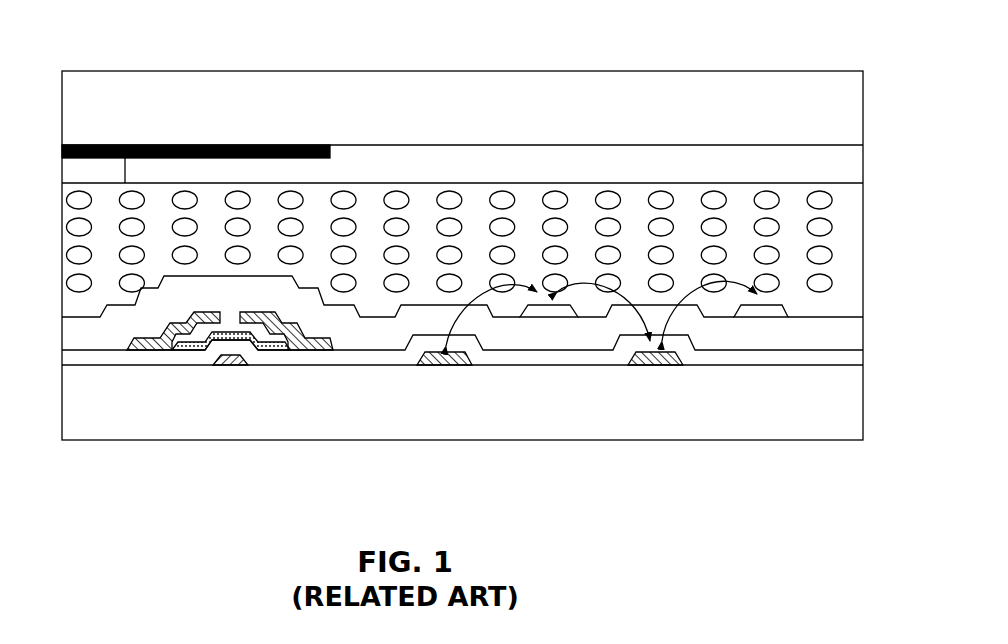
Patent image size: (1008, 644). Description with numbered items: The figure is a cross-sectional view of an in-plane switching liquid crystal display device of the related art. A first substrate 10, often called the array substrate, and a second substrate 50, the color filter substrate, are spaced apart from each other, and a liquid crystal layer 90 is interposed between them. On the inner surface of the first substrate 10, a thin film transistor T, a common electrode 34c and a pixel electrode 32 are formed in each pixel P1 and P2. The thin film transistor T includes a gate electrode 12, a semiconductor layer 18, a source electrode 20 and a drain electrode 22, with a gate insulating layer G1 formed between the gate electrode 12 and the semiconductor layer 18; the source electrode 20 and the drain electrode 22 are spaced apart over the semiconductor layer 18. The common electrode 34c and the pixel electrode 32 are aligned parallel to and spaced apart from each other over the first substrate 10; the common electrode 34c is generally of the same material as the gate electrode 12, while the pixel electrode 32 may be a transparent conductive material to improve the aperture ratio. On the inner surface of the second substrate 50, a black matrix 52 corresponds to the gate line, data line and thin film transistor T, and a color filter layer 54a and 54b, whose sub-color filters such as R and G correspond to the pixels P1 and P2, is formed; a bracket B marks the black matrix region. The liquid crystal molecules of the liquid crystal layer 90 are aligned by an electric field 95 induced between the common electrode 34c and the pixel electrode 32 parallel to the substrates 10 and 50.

The first substrate 10 is at (462, 380).
The gate electrode 12 is at (222, 366).
The semiconductor layer 18 is at (279, 352).
The source electrode 20 is at (208, 311).
The drain electrode 22 is at (259, 311).
The pixel electrode 32 is at (556, 318).
The common electrode 34c is at (457, 366).
The second substrate 50 is at (462, 121).
The black matrix 52 is at (258, 145).
The color filter layer 54a is at (108, 160).
The color filter layer 54b is at (740, 152).
The liquid crystal layer 90 is at (852, 212).
The electric field 95 is at (631, 288).
The gate insulating layer G1 is at (397, 352).
The thin film transistor T is at (97, 375).
The pixel P1 is at (158, 395).
The pixel P2 is at (863, 412).
The black matrix region B is at (38, 440).
The red color filter R is at (103, 170).
The green color filter G is at (462, 167).